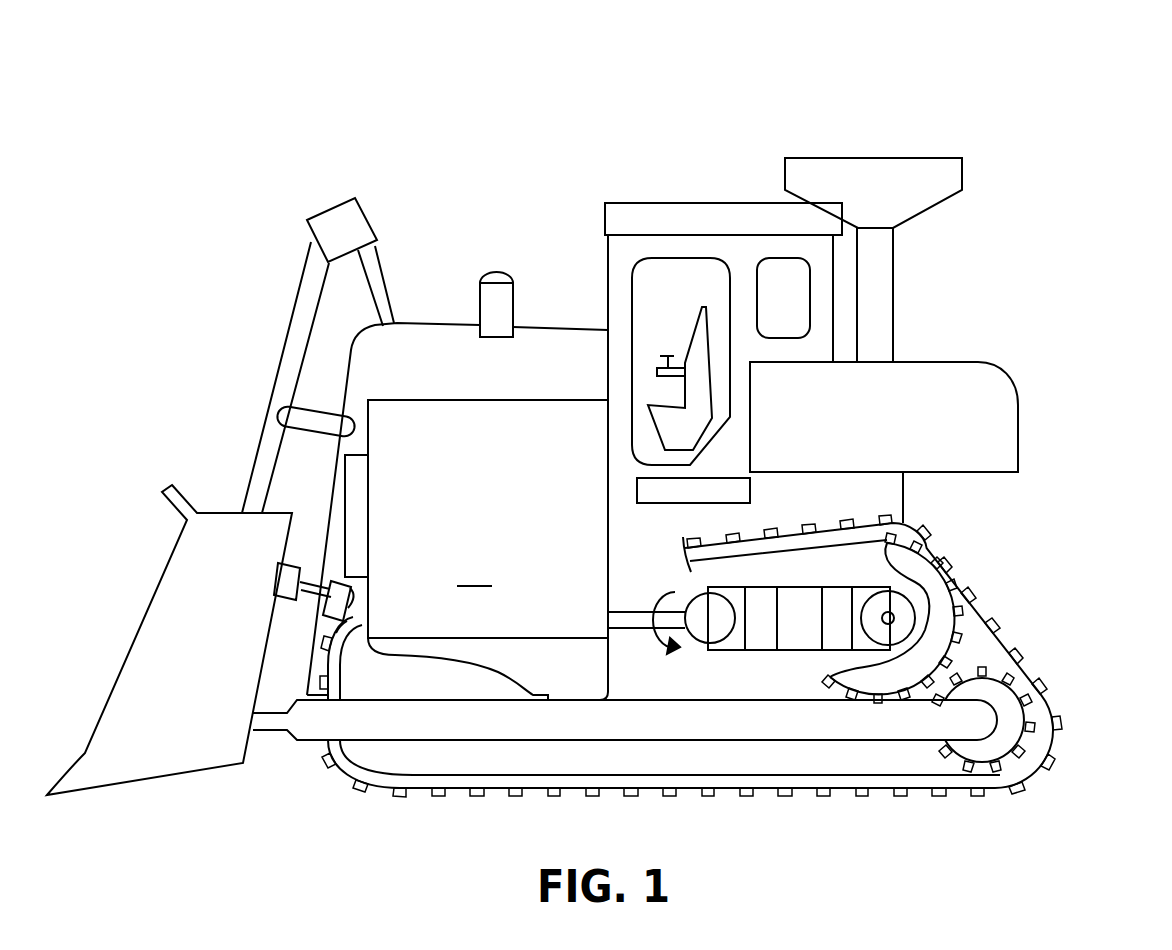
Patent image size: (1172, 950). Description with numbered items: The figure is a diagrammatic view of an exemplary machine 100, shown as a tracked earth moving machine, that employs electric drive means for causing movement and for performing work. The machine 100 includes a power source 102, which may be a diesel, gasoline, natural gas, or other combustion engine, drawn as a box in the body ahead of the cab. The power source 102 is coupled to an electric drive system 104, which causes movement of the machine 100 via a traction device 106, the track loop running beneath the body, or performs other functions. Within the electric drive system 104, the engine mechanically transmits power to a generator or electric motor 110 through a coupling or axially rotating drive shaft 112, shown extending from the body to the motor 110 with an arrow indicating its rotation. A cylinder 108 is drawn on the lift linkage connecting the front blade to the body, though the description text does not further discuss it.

The machine (bulldozer) 100 is at (154, 102).
The power source 102 is at (488, 519).
The drive system / final drive assembly 104 is at (803, 680).
The track (ground engaging member) 106 is at (970, 574).
The hydraulic cylinder 108 is at (357, 517).
The motor 110 is at (710, 618).
The output shaft 112 is at (633, 632).